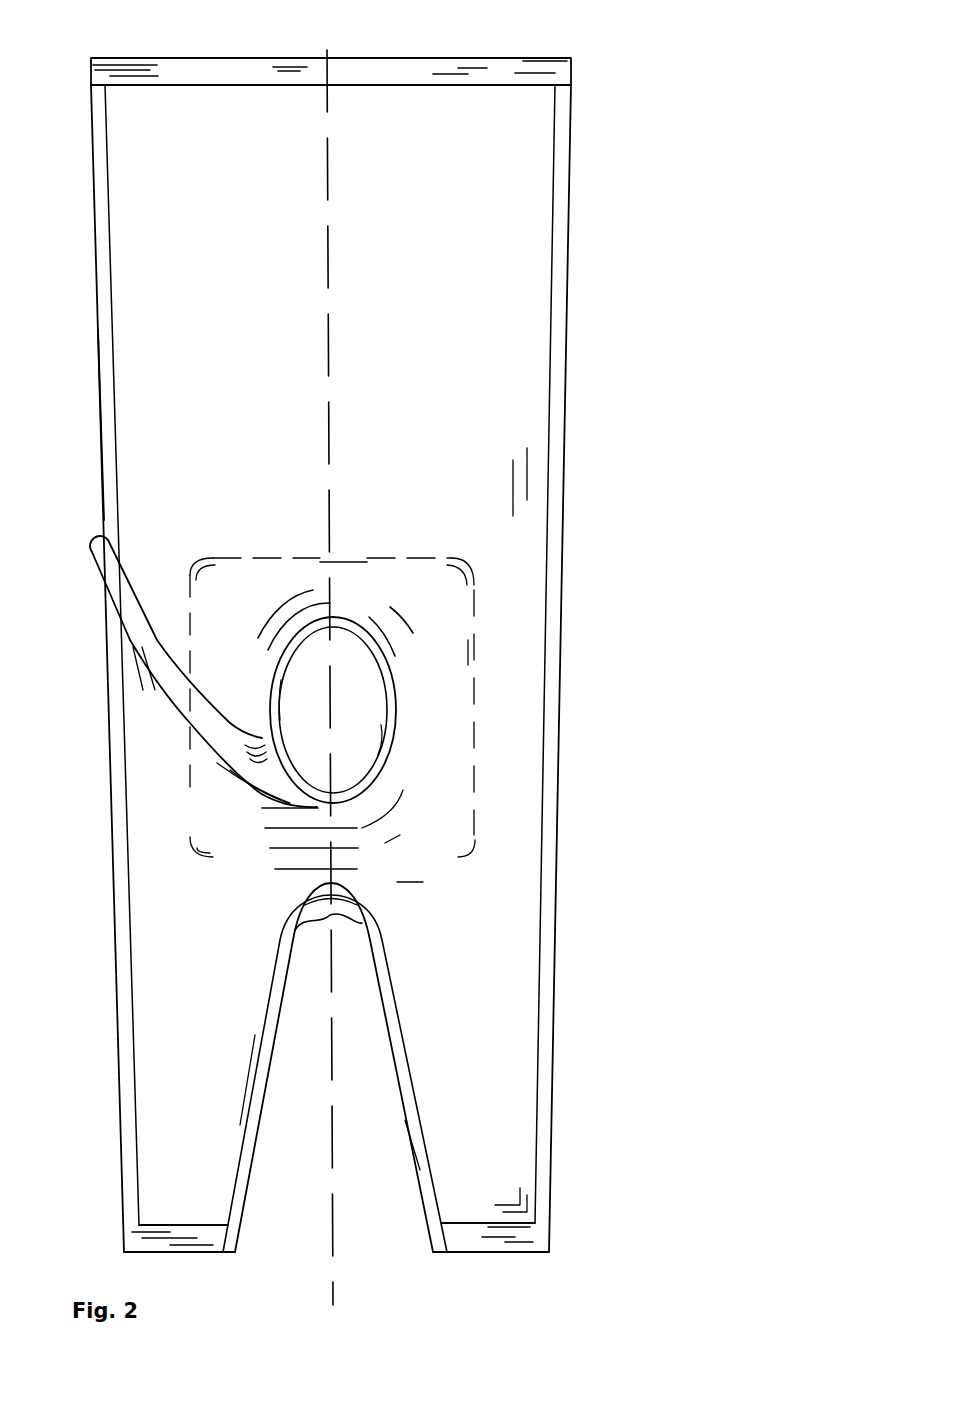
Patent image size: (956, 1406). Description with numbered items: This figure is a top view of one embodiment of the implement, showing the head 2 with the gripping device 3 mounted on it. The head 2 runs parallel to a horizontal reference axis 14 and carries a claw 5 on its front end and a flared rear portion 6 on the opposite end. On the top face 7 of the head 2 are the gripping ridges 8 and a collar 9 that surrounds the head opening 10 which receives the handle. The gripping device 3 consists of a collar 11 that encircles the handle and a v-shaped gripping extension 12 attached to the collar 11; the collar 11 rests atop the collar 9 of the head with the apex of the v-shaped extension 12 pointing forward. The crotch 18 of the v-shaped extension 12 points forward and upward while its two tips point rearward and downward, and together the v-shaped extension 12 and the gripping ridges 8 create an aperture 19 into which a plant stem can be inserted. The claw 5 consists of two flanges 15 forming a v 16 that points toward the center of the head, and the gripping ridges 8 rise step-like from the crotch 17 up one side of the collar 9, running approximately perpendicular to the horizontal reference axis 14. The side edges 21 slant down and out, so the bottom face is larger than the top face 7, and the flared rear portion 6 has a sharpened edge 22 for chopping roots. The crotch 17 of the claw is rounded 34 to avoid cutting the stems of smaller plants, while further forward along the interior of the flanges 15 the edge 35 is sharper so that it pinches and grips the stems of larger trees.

The head 2 is at (690, 563).
The gripping device 3 is at (260, 795).
The claw 5 is at (560, 1222).
The flared rear portion 6 is at (418, 199).
The top face 7 is at (515, 613).
The gripping ridges 8 is at (260, 857).
The collar 9 is at (335, 600).
The head opening 10 is at (373, 722).
The collar 11 is at (342, 625).
The v-shaped gripping extension 12 is at (175, 700).
The horizontal reference axis 14 is at (333, 1272).
The flanges 15 is at (205, 1079).
The v 16 is at (377, 1097).
The crotch 17 is at (338, 885).
The crotch 18 is at (258, 738).
The aperture 19 is at (276, 658).
The side edges 21 is at (108, 428).
The sharpened edge 22 is at (203, 75).
The rounded crotch 34 is at (295, 930).
The edge 35 is at (285, 1000).